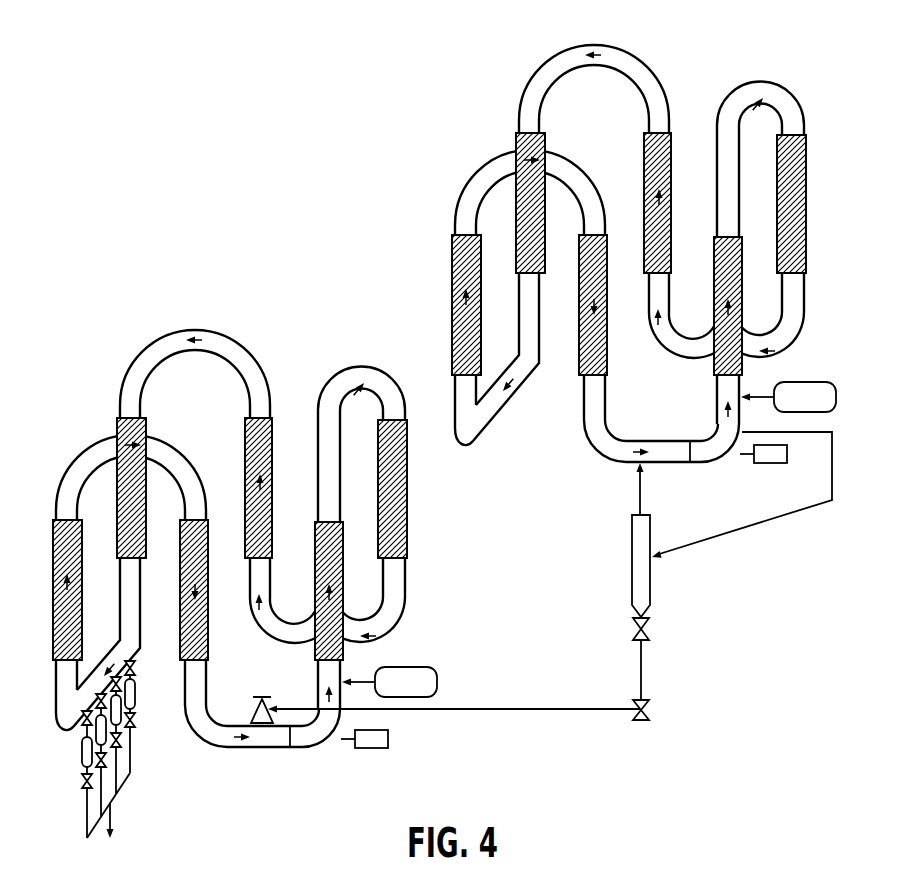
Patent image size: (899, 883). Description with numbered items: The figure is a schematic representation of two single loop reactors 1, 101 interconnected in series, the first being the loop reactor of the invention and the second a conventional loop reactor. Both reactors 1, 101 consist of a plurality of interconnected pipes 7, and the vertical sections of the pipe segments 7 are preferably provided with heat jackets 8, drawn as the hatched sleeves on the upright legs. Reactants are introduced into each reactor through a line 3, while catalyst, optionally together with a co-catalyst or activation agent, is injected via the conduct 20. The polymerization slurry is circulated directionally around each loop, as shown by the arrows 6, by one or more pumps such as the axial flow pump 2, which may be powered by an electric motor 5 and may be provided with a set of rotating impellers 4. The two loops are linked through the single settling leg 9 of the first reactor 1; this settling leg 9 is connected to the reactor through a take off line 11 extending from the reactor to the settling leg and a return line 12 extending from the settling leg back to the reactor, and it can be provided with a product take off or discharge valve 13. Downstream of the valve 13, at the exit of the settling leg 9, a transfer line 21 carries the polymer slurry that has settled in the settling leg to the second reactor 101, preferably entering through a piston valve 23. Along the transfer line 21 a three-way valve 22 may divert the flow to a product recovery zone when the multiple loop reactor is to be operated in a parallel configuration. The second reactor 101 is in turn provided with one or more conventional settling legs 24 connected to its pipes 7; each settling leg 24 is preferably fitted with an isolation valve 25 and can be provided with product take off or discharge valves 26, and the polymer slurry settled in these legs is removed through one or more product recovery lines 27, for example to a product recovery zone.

The loop reactor 1 is at (793, 63).
The loop reactor 101 is at (392, 324).
The axial flow pump 2 is at (328, 753).
The line 3 is at (362, 679).
The rotating impellers 4 is at (292, 748).
The electric motor 5 is at (388, 738).
The arrows 6 is at (347, 393).
The interconnected pipes 7 is at (406, 592).
The heat jackets 8 is at (409, 488).
The settling leg 9 is at (628, 558).
The take off line 11 is at (778, 521).
The return line 12 is at (636, 489).
The product take off or discharge valve 13 is at (634, 634).
The conduct 20 is at (230, 721).
The transfer line 21 is at (523, 708).
The three-way valve 22 is at (652, 712).
The piston valve 23 is at (262, 690).
The settling legs 24 is at (82, 766).
The isolation valve 25 is at (134, 666).
The product take off or discharge valves 26 is at (134, 720).
The product recovery lines 27 is at (110, 833).